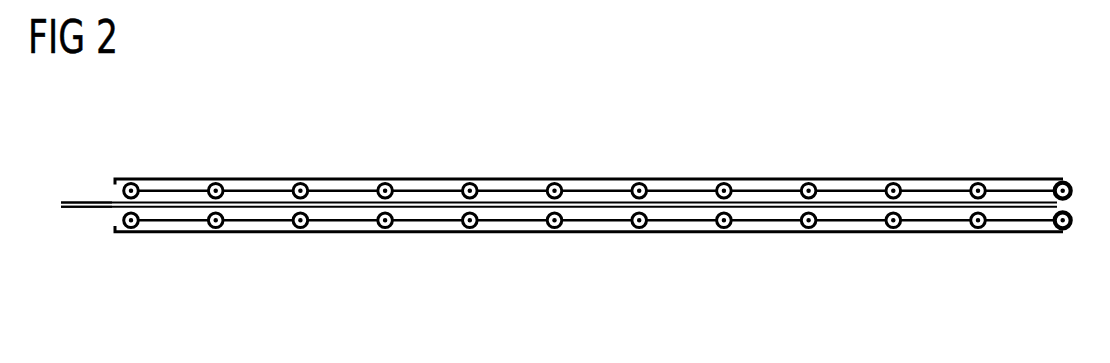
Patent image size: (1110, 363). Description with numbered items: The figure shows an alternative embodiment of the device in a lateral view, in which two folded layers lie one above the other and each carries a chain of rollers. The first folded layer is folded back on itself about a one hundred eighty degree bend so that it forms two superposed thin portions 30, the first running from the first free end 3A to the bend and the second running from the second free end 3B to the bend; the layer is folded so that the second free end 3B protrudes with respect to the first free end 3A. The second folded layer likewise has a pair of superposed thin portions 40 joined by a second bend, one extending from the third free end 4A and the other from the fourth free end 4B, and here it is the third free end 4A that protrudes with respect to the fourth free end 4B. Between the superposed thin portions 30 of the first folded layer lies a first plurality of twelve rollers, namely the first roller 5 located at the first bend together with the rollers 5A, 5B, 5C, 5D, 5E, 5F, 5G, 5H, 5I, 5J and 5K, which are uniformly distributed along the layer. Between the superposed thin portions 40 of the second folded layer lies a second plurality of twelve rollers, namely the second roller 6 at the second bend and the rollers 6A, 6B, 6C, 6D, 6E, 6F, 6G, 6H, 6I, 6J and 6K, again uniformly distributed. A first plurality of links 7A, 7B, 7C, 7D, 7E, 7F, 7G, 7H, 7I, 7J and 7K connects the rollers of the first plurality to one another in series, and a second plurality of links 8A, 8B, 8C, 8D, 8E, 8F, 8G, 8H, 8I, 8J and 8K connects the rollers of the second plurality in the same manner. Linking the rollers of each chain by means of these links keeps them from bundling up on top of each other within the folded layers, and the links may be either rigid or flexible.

The first free end 3A is at (116, 235).
The second free end 3B is at (62, 210).
The superposed thin portions of first folded layer 30 is at (100, 210).
The third free end 4A is at (62, 200).
The fourth free end 4B is at (116, 176).
The superposed thin portions of second folded layer 40 is at (100, 200).
The first roller 5 is at (1060, 230).
The roller of first plurality of rollers 5A is at (128, 228).
The roller of first plurality of rollers 5B is at (213, 228).
The roller of first plurality of rollers 5C is at (297, 228).
The roller of first plurality of rollers 5D is at (382, 228).
The roller of first plurality of rollers 5E is at (467, 228).
The roller of first plurality of rollers 5F is at (552, 228).
The roller of first plurality of rollers 5G is at (636, 228).
The roller of first plurality of rollers 5H is at (721, 228).
The roller of first plurality of rollers 5I is at (806, 228).
The roller of first plurality of rollers 5J is at (890, 228).
The roller of first plurality of rollers 5K is at (975, 228).
The second roller 6 is at (1060, 181).
The roller of second plurality of rollers 6A is at (128, 183).
The roller of second plurality of rollers 6B is at (213, 183).
The roller of second plurality of rollers 6C is at (297, 183).
The roller of second plurality of rollers 6D is at (382, 183).
The roller of second plurality of rollers 6E is at (467, 183).
The roller of second plurality of rollers 6F is at (552, 183).
The roller of second plurality of rollers 6G is at (636, 183).
The roller of second plurality of rollers 6H is at (721, 183).
The roller of second plurality of rollers 6I is at (806, 183).
The roller of second plurality of rollers 6J is at (890, 183).
The roller of second plurality of rollers 6K is at (975, 183).
The link of first plurality of links 7A is at (170, 223).
The link of first plurality of links 7B is at (255, 223).
The link of first plurality of links 7C is at (340, 223).
The link of first plurality of links 7D is at (424, 223).
The link of first plurality of links 7E is at (509, 223).
The link of first plurality of links 7F is at (594, 223).
The link of first plurality of links 7G is at (678, 223).
The link of first plurality of links 7H is at (763, 223).
The link of first plurality of links 7I is at (848, 223).
The link of first plurality of links 7J is at (933, 223).
The link of first plurality of links 7K is at (1017, 223).
The link of second plurality of links 8A is at (170, 188).
The link of second plurality of links 8B is at (255, 188).
The link of second plurality of links 8C is at (340, 188).
The link of second plurality of links 8D is at (424, 188).
The link of second plurality of links 8E is at (509, 188).
The link of second plurality of links 8F is at (594, 188).
The link of second plurality of links 8G is at (678, 188).
The link of second plurality of links 8H is at (763, 188).
The link of second plurality of links 8I is at (848, 188).
The link of second plurality of links 8J is at (933, 188).
The link of second plurality of links 8K is at (1017, 188).